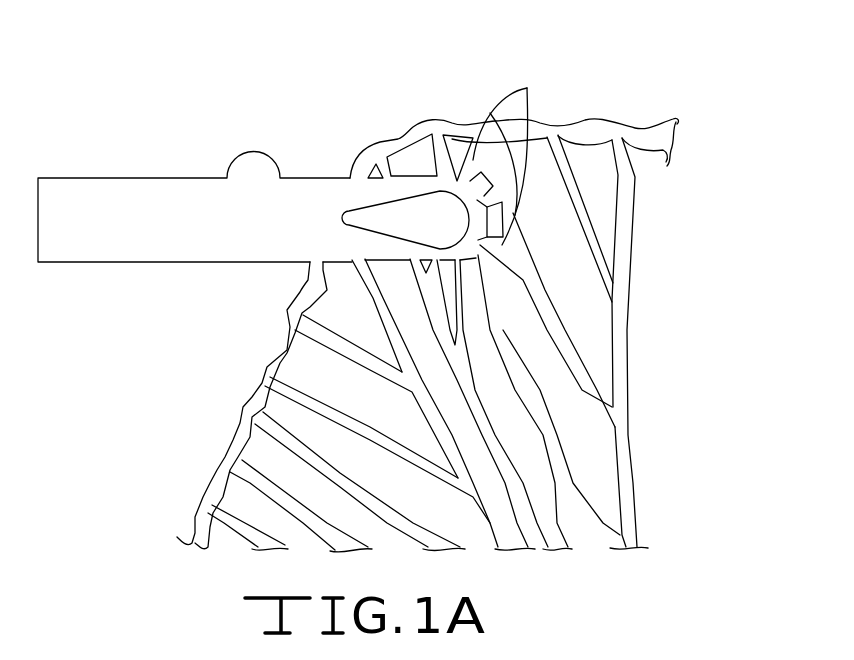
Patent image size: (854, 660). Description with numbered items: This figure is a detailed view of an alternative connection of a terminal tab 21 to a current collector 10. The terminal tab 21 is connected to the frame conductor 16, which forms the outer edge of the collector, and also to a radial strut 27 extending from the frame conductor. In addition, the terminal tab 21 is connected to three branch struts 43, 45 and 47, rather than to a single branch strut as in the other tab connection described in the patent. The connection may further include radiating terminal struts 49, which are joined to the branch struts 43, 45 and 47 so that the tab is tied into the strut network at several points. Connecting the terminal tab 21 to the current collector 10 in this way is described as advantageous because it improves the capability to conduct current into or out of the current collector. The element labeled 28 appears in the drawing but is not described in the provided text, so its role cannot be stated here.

The current collector 10 is at (686, 236).
The frame conductor 16 is at (212, 436).
The terminal tab 21 is at (98, 200).
The radial strut 27 is at (373, 298).
The axis 28 is at (292, 615).
The branch strut 43 is at (398, 153).
The branch strut 45 is at (442, 156).
The branch strut 47 is at (572, 360).
The radiating terminal struts 49 is at (517, 159).